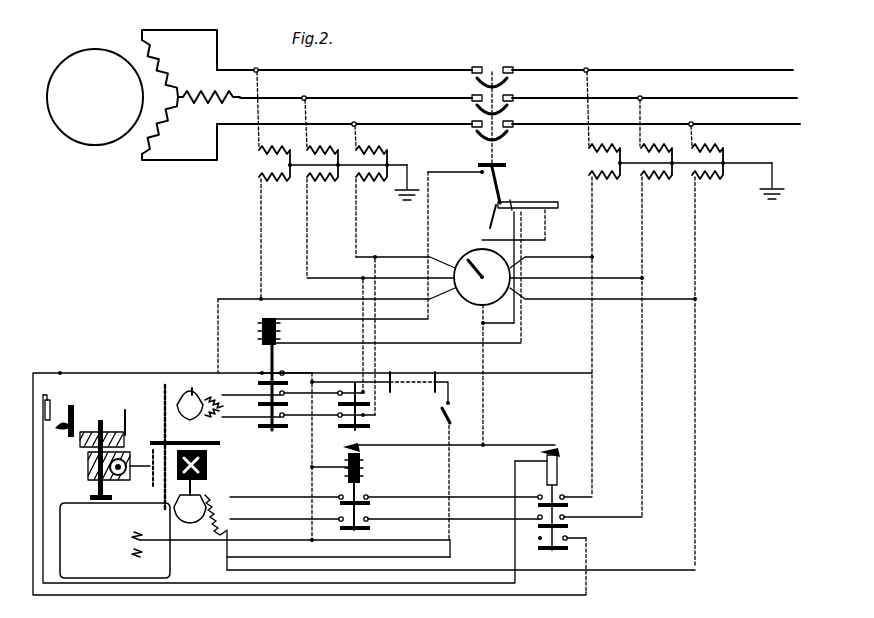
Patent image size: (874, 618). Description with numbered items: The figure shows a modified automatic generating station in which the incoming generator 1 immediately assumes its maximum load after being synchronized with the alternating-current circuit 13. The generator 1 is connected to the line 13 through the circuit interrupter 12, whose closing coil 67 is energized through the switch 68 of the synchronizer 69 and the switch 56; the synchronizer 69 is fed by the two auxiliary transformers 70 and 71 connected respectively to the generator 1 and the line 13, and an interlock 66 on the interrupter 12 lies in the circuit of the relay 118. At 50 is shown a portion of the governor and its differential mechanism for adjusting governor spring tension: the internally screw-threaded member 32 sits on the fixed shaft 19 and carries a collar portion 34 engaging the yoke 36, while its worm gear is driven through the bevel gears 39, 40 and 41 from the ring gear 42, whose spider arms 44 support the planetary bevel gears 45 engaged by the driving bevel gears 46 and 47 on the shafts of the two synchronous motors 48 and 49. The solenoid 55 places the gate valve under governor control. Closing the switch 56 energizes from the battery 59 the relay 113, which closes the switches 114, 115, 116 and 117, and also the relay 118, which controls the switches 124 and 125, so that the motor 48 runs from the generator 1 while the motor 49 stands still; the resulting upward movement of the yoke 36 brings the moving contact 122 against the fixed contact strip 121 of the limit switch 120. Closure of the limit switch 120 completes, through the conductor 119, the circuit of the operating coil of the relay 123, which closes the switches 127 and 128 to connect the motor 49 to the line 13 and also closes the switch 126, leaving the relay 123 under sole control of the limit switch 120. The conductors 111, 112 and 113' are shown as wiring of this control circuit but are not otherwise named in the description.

The alternating-current dynamo-electric machine 1 is at (104, 104).
The circuit interrupter 12 is at (538, 141).
The alternating-current circuit 13 is at (548, 95).
The fixed shaft 19 is at (100, 420).
The internally screw-threaded member 32 is at (88, 470).
The collar portion 34 is at (108, 440).
The yoke 36 is at (125, 410).
The bevel gear 39 is at (112, 482).
The bevel gear 40 is at (133, 455).
The bevel gear 41 is at (153, 478).
The ring gear 42 is at (220, 443).
The spider arms 44 is at (210, 455).
The planetary bevel gears 45 is at (210, 472).
The driving bevel gear 46 is at (160, 440).
The driving bevel gear 47 is at (200, 500).
The synchronous electric motor 48 is at (196, 400).
The synchronous electric motor 49 is at (182, 510).
The governor and differential mechanism portion 50 is at (100, 536).
The governor solenoid 55 is at (135, 545).
The switch 56 is at (451, 412).
The battery 59 is at (408, 380).
The interlock 66 is at (505, 163).
The operating coil 67 is at (525, 200).
The switch 68 is at (482, 277).
The synchronizer 69 is at (466, 298).
The auxiliary transformer 70 is at (252, 168).
The auxiliary transformer 71 is at (760, 150).
The conductor 111 is at (452, 548).
The conductor 112 is at (310, 457).
The relay 113 is at (376, 486).
The conductor 113' is at (532, 333).
The switch 114 is at (340, 404).
The switch 115 is at (340, 424).
The switch 116 is at (368, 500).
The switch 117 is at (368, 523).
The relay 118 is at (280, 330).
The conductor 119 is at (120, 373).
The limit switch 120 is at (68, 405).
The fixed contact strip 121 is at (57, 405).
The moving contact 122 is at (60, 432).
The relay 123 is at (556, 450).
The switch 124 is at (252, 392).
The switch 125 is at (252, 414).
The switch 126 is at (536, 544).
The switch 127 is at (568, 501).
The switch 128 is at (572, 522).